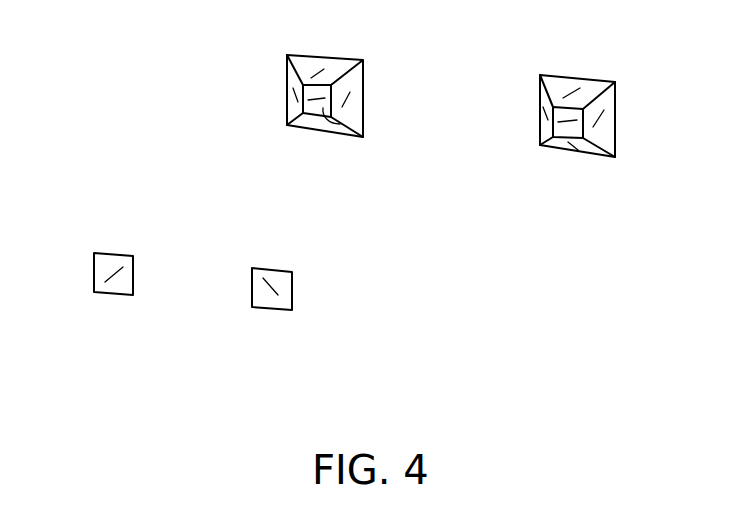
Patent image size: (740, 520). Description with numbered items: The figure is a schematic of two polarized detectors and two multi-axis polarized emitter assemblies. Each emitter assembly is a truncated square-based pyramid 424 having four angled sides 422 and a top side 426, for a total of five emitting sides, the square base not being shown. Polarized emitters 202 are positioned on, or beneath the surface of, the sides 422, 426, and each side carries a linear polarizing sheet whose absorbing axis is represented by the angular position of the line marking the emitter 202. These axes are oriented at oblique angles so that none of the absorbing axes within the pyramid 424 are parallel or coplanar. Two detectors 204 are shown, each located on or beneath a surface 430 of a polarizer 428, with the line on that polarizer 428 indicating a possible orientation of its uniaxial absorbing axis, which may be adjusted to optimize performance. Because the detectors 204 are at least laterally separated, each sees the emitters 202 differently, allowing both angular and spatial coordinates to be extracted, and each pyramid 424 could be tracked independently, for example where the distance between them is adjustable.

The polarized emitter 202 is at (329, 68).
The detector 204 is at (269, 288).
The angled side 422 is at (553, 82).
The truncated square-based pyramid 424 is at (257, 135).
The top side 426 is at (335, 127).
The polarizer 428 is at (104, 306).
The surface 430 is at (102, 263).